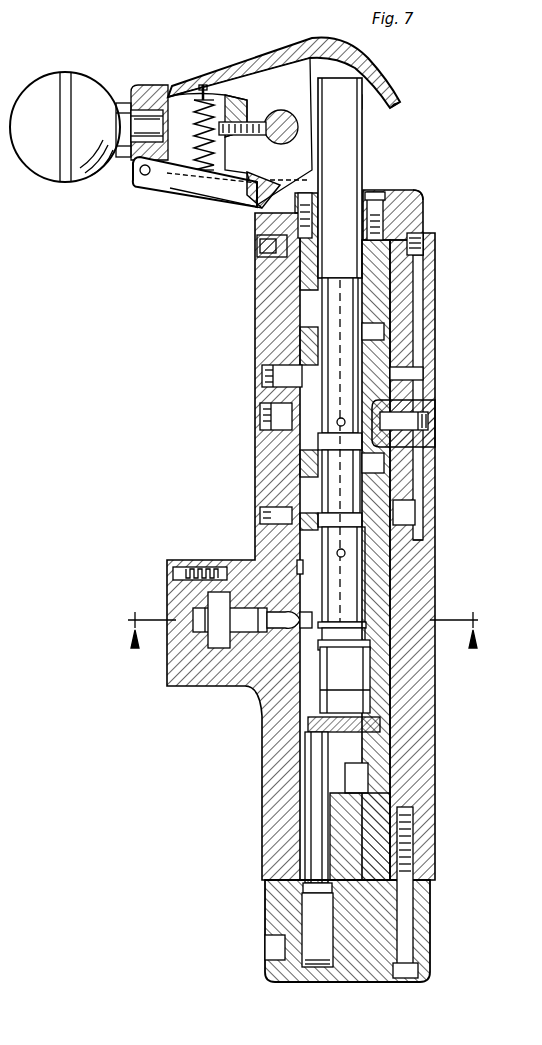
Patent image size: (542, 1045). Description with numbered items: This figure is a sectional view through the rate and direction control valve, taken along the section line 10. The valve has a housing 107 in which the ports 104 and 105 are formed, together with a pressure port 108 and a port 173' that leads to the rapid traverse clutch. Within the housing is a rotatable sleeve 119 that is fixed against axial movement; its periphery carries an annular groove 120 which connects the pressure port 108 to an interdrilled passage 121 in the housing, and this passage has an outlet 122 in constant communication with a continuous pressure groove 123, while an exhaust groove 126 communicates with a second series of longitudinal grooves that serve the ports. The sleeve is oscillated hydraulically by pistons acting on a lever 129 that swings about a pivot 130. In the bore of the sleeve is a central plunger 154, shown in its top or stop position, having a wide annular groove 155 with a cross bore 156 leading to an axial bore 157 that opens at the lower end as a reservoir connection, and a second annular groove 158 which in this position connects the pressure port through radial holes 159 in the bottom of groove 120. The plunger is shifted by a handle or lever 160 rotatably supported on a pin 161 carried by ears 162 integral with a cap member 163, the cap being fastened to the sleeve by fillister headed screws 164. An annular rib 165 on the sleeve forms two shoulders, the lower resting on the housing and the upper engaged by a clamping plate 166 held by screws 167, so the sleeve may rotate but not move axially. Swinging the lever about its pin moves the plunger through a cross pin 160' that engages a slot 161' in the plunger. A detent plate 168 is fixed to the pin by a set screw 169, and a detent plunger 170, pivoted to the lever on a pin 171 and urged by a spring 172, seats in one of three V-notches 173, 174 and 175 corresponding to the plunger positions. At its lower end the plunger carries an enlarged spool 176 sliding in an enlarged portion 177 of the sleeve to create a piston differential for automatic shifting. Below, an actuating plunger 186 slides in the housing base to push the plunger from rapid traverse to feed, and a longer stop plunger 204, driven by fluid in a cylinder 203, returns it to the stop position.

The section line 10 is at (303, 640).
The port 104 is at (440, 420).
The port 105 is at (262, 417).
The housing 107 is at (436, 250).
The port 108 is at (282, 513).
The rotatable sleeve 119 is at (262, 268).
The annular groove 120 is at (298, 522).
The interdrilled passage 121 is at (412, 513).
The outlet 122 is at (398, 378).
The annular groove 123 is at (293, 374).
The annular groove 126 is at (303, 470).
The lever 129 is at (233, 680).
The pivot 130 is at (168, 596).
The central plunger 154 is at (353, 143).
The wide annular groove 155 is at (318, 357).
The cross bore 156 is at (337, 424).
The axial bore 157 is at (372, 593).
The second annular groove 158 is at (327, 490).
The radial holes 159 is at (425, 541).
The lever 160 is at (89, 120).
The cross pin 160' is at (393, 98).
The pin 161 is at (284, 80).
The slot 161' is at (395, 84).
The ears 162 is at (288, 100).
The cap member 163 is at (398, 189).
The fillister headed screws 164 is at (375, 192).
The annular rib 165 is at (422, 238).
The clamping plate 166 is at (422, 196).
The screws 167 is at (207, 190).
The detent plate 168 is at (232, 80).
The set screw 169 is at (222, 82).
The detent plunger 170 is at (183, 189).
The pin 171 is at (144, 185).
The spring 172 is at (190, 106).
The V-notch 173 is at (250, 199).
The port 173' is at (259, 558).
The V-notch 174 is at (246, 210).
The V-notch 175 is at (213, 190).
The enlarged spool 176 is at (360, 660).
The enlarged portion 177 is at (260, 713).
The actuating plunger 186 is at (368, 782).
The cylinder 203 is at (313, 913).
The stop plunger 204 is at (305, 765).